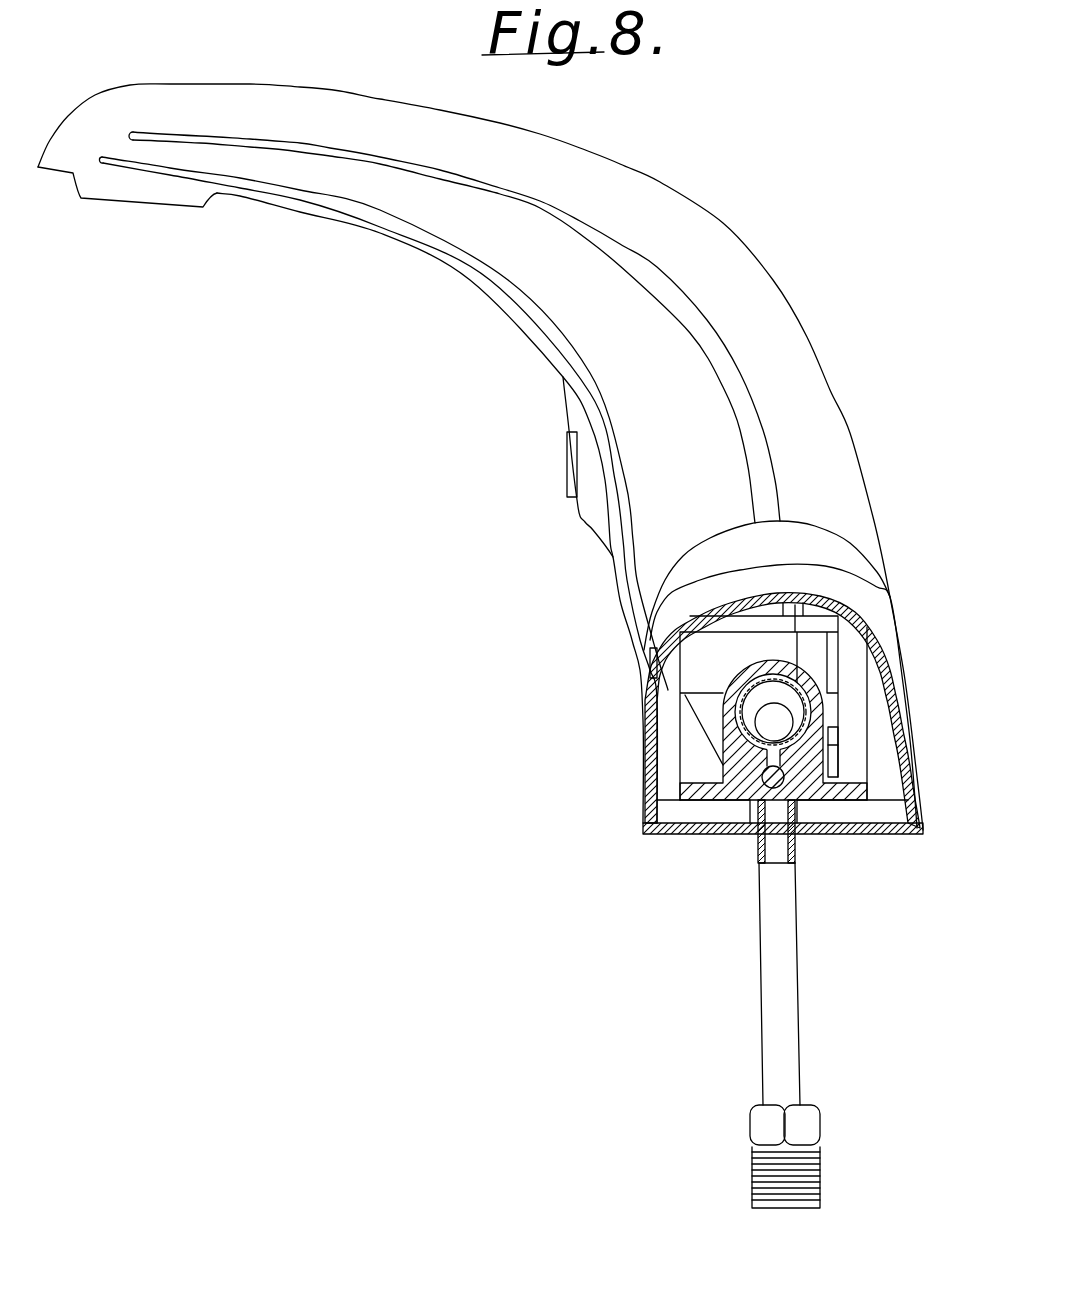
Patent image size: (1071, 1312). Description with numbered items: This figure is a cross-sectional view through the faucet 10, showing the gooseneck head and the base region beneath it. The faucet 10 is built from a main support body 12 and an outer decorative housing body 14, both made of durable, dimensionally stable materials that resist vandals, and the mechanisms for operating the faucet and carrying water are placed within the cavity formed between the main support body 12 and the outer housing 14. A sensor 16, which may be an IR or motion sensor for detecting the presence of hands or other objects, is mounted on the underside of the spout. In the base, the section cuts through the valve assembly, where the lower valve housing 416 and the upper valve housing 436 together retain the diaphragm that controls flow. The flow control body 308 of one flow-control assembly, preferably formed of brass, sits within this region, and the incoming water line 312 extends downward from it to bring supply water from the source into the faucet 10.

The faucet 10 is at (678, 174).
The main support body 12 is at (341, 223).
The outer decorative housing body 14 is at (670, 592).
The sensor 16 is at (567, 456).
The upper valve housing 436 is at (718, 623).
The lower valve housing 416 is at (700, 667).
The flow control body 308 is at (720, 745).
The incoming water line 312 is at (787, 985).